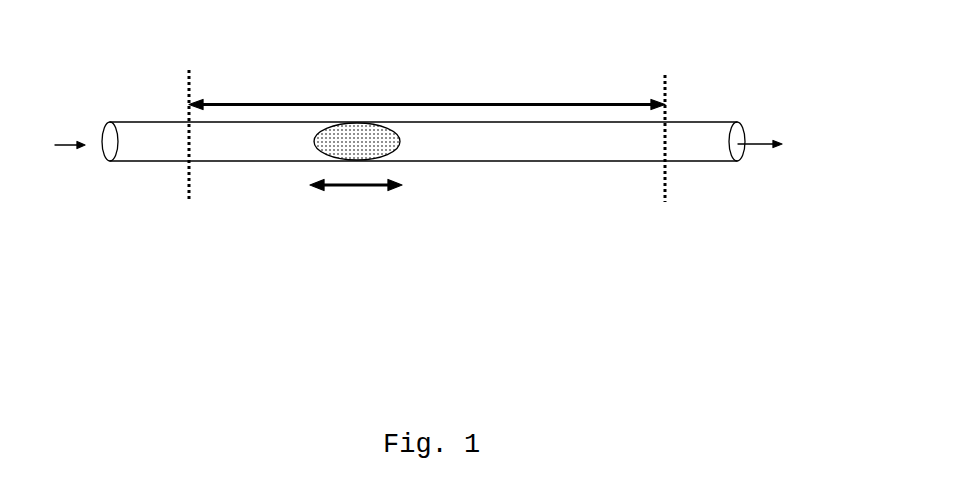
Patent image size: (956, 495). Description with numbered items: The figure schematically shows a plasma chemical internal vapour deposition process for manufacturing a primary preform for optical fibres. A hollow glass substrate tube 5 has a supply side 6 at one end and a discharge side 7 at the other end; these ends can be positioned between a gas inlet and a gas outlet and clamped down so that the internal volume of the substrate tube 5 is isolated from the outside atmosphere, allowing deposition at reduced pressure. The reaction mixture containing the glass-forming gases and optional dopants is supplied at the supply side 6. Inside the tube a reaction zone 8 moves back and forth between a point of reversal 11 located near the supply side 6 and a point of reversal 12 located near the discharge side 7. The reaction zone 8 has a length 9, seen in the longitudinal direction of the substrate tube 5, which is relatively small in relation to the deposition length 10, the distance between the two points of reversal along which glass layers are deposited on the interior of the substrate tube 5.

The hollow glass substrate tube 5 is at (143, 121).
The supply side 6 is at (108, 140).
The discharge side 7 is at (741, 150).
The reaction zone 8 is at (398, 150).
The length of the reaction zone 9 is at (356, 205).
The deposition length 10 is at (412, 105).
The point of reversal 11 is at (192, 213).
The point of reversal 12 is at (648, 215).